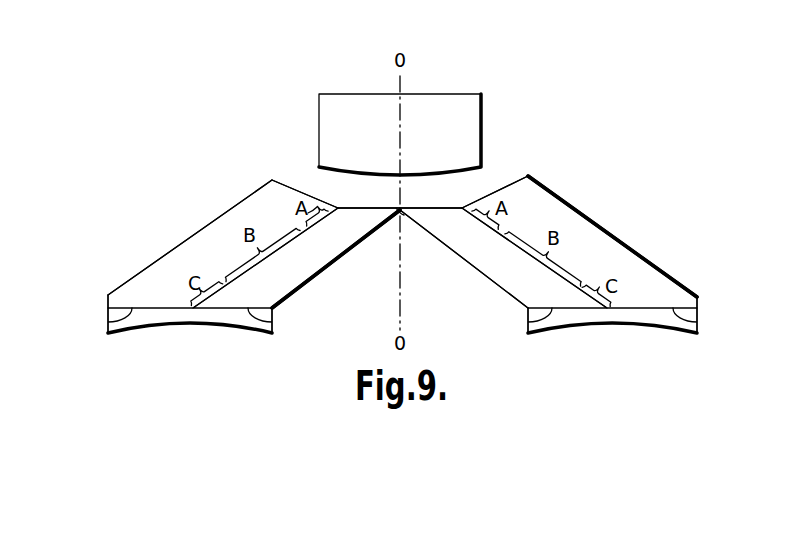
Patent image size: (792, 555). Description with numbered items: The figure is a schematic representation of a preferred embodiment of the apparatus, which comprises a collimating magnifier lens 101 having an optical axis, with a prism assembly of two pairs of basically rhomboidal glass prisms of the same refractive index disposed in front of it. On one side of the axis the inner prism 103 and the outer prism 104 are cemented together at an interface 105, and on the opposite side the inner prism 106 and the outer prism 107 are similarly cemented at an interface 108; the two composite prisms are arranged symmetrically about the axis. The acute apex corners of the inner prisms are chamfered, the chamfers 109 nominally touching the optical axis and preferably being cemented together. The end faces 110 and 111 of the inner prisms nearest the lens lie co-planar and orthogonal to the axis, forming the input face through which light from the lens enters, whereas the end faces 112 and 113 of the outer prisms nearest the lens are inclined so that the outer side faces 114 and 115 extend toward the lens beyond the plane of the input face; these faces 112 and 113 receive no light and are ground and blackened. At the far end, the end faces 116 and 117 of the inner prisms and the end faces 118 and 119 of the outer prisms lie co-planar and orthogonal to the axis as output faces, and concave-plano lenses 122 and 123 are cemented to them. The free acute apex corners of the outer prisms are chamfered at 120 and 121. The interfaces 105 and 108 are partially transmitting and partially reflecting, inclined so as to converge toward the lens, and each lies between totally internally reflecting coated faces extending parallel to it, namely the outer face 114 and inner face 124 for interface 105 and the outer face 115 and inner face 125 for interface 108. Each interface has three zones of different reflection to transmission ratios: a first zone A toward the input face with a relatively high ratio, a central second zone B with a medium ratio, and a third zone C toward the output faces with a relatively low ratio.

The collimating magnifier lens 101 is at (482, 119).
The inner prism 103 is at (285, 297).
The outer prism 104 is at (155, 272).
The interface 105 is at (276, 251).
The inner prism 106 is at (512, 296).
The outer prism 107 is at (660, 283).
The interface 108 is at (515, 245).
The chamfers 109 is at (403, 212).
The end face 110 is at (376, 208).
The end face 111 is at (433, 208).
The end face 112 is at (298, 191).
The end face 113 is at (511, 188).
The outer side face 114 is at (213, 221).
The outer side face 115 is at (612, 236).
The end face 116 is at (272, 325).
The end face 117 is at (528, 325).
The end face 118 is at (108, 322).
The end face 119 is at (697, 325).
The chamfered corner 120 is at (108, 302).
The chamfered corner 121 is at (698, 302).
The concave-plano lens 122 is at (167, 316).
The concave-plano lens 123 is at (652, 316).
The inner face 124 is at (339, 257).
The inner face 125 is at (462, 258).